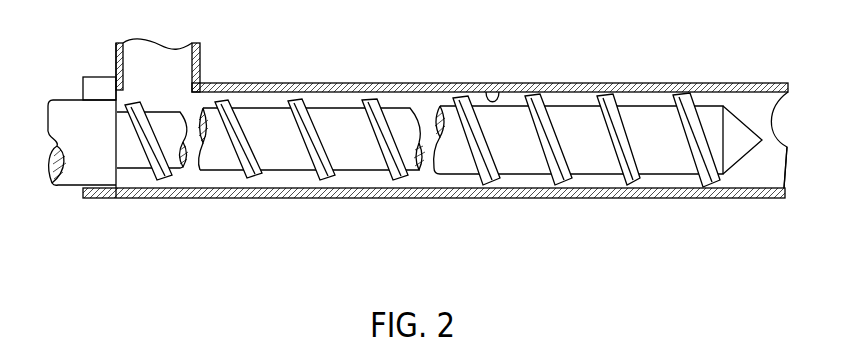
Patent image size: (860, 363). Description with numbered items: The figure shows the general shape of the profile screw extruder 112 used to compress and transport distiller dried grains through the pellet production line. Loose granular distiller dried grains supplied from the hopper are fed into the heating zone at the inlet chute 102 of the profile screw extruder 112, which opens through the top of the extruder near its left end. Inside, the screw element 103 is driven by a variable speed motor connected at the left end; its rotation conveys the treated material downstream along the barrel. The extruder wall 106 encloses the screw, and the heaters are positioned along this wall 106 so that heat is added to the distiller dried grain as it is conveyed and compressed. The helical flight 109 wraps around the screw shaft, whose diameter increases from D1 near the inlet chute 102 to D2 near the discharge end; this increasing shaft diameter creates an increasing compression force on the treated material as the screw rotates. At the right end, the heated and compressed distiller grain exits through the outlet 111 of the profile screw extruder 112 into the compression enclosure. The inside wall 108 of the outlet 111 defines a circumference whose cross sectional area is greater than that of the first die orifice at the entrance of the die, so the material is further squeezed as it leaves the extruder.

The inlet chute 102 is at (137, 46).
The screw element 103 is at (72, 188).
The wall 106 is at (265, 84).
The inside wall 108 is at (500, 96).
The screw flight 109 is at (255, 178).
The outlet 111 is at (781, 146).
The profile screw extruder 112 is at (363, 163).
The shaft diameter D1 is at (143, 160).
The shaft diameter D2 is at (687, 162).